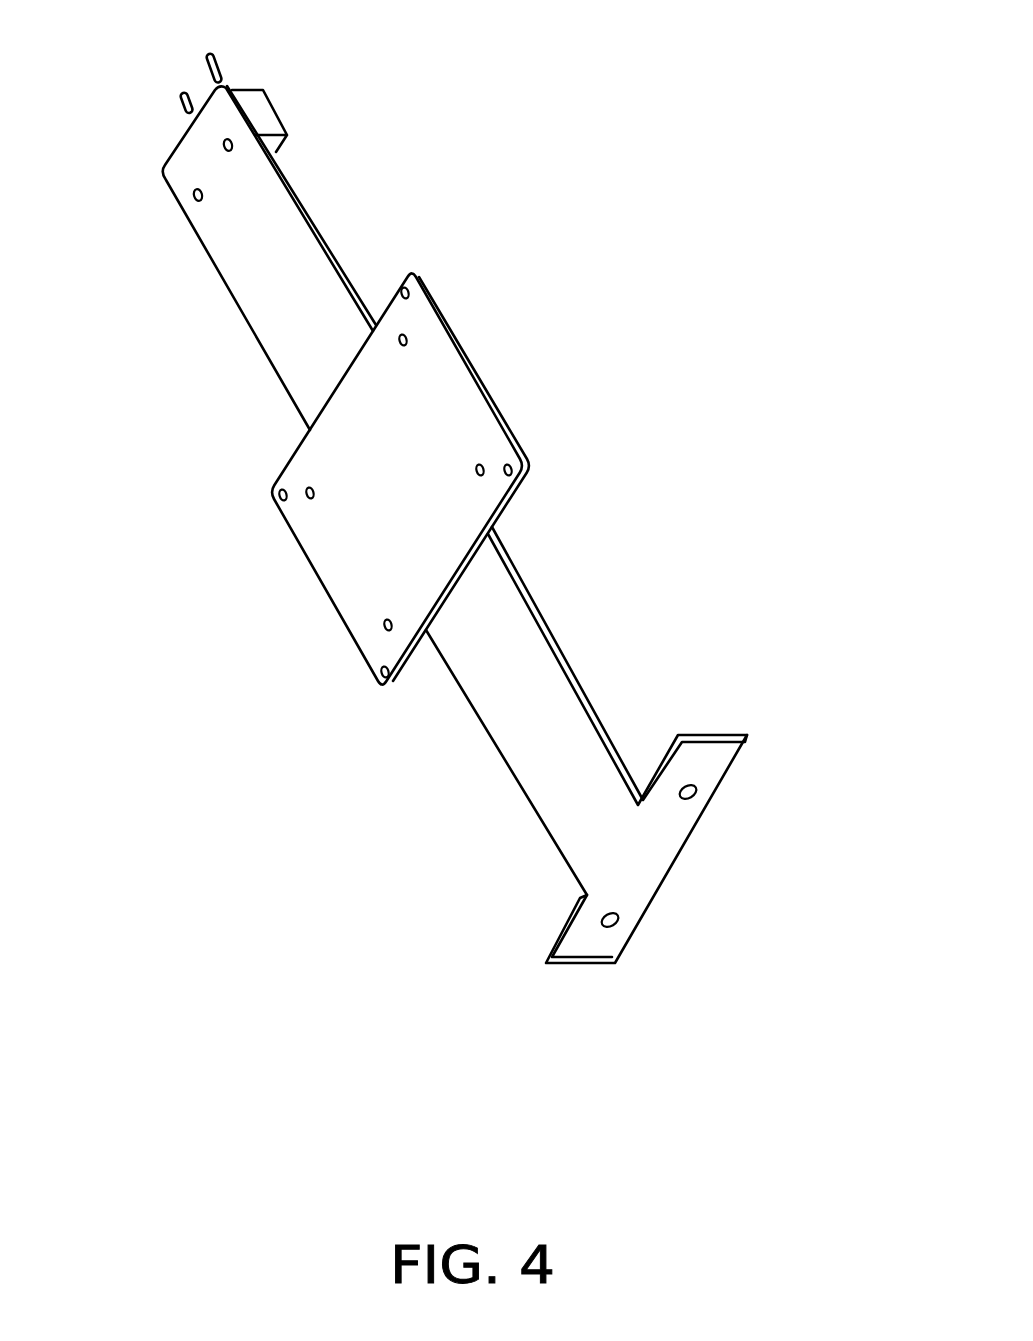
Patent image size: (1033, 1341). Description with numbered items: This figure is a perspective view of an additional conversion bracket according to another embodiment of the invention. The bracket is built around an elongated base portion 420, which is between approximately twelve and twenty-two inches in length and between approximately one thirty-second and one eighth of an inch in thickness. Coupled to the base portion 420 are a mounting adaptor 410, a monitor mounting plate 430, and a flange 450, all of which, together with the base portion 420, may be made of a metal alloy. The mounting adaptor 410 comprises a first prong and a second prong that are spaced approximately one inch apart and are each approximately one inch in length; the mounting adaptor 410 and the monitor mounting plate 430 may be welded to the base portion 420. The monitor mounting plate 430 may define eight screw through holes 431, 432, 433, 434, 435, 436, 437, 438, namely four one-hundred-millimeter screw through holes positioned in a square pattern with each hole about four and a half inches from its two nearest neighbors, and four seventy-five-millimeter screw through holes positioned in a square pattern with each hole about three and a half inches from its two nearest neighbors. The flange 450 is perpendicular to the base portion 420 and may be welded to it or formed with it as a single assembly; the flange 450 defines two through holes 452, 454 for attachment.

The mounting adaptor 410 is at (276, 111).
The base portion 420 is at (240, 242).
The monitor mounting plate 430 is at (342, 563).
The mounting hole 431 is at (272, 494).
The mounting hole 432 is at (404, 289).
The mounting hole 433 is at (522, 492).
The mounting hole 434 is at (376, 678).
The hole 435 is at (308, 500).
The hole 436 is at (403, 333).
The hole 437 is at (480, 463).
The hole 438 is at (378, 625).
The flange 450 is at (652, 860).
The through hole 452 is at (617, 927).
The through hole 454 is at (698, 796).